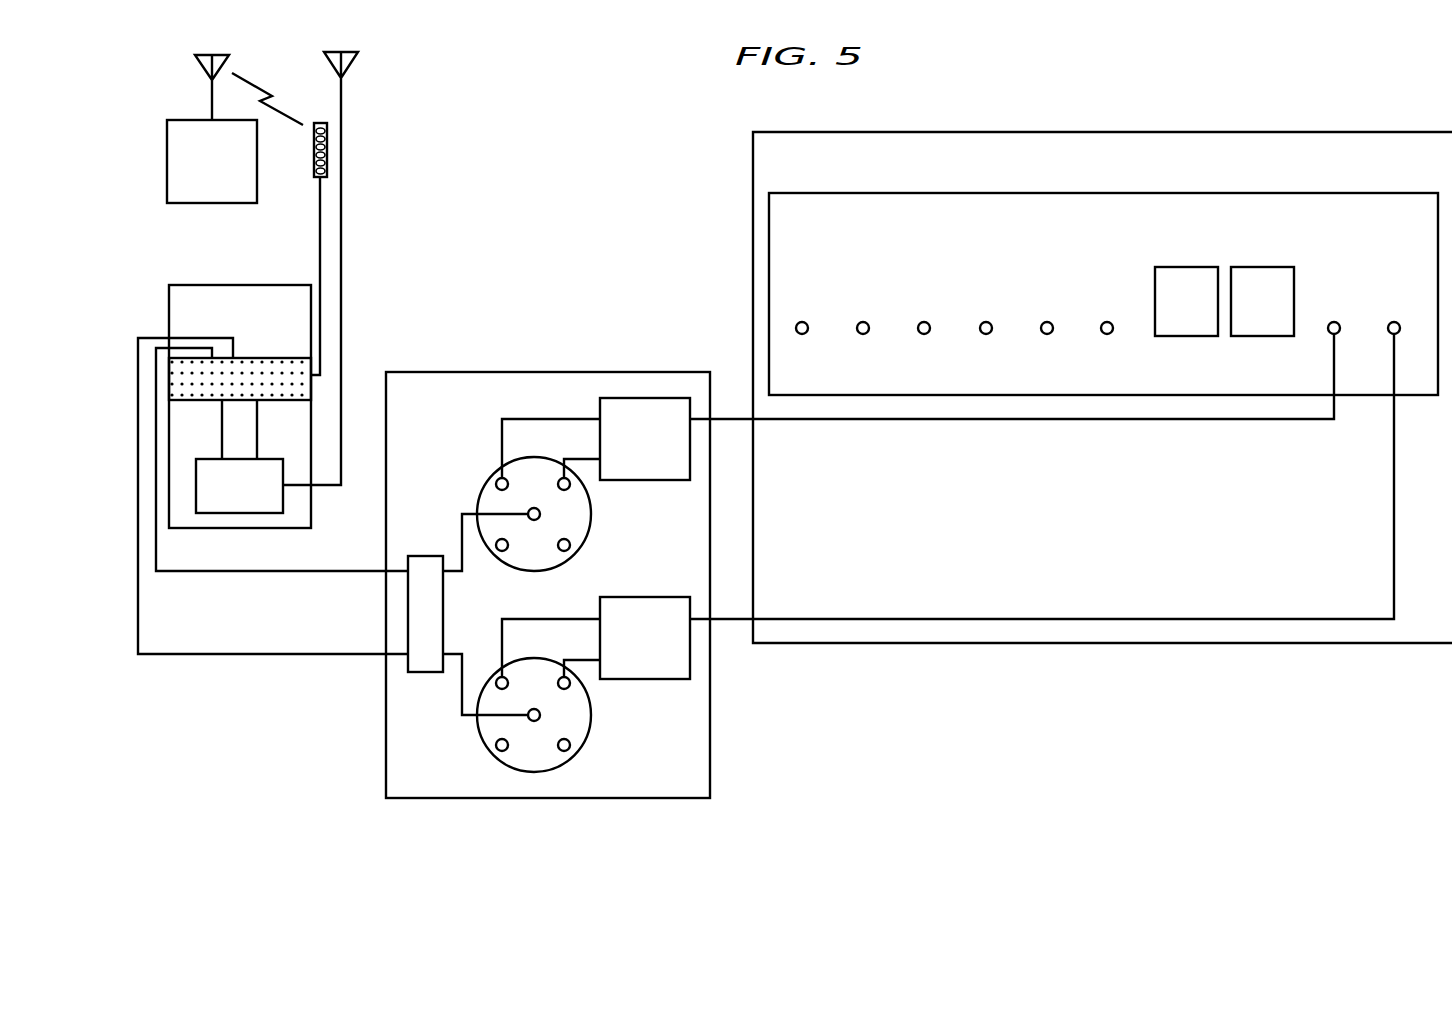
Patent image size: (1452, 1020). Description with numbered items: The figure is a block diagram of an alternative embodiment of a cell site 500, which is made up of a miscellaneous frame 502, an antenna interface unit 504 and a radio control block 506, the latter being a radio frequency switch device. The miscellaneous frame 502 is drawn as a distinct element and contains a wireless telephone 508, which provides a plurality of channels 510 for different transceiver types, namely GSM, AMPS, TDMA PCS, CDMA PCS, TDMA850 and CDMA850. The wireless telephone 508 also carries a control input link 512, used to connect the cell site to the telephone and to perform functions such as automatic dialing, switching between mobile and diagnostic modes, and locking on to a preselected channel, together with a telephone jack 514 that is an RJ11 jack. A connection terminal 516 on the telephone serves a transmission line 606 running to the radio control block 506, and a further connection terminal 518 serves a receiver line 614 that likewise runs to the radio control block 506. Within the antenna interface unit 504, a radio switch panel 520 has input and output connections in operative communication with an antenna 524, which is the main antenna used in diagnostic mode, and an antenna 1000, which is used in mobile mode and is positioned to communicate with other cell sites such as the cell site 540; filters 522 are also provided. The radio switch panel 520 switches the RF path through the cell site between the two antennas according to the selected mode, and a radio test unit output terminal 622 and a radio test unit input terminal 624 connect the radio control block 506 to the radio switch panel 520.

The cell site 500 is at (559, 212).
The miscellaneous frame 502 is at (1105, 130).
The antenna interface unit (AIF) 504 is at (240, 285).
The radio control block (RCB) 506 is at (546, 372).
The wireless telephone 508 is at (1105, 192).
The plurality of channels 510 is at (971, 252).
The control input link 512 is at (1185, 266).
The telephone jack 514 is at (1262, 266).
The connection terminal 516 is at (1334, 321).
The connection terminal 518 is at (1394, 321).
The radio switch panel 520 is at (262, 358).
The filters 522 is at (277, 458).
The antenna 524 is at (350, 63).
The cell site 540 is at (185, 120).
The transmission line 606 is at (730, 415).
The receiver line 614 is at (730, 625).
The radio test unit (RTU) output terminal 622 is at (353, 568).
The radio test unit (RTU) input terminal 624 is at (278, 652).
The antenna 1000 is at (315, 178).